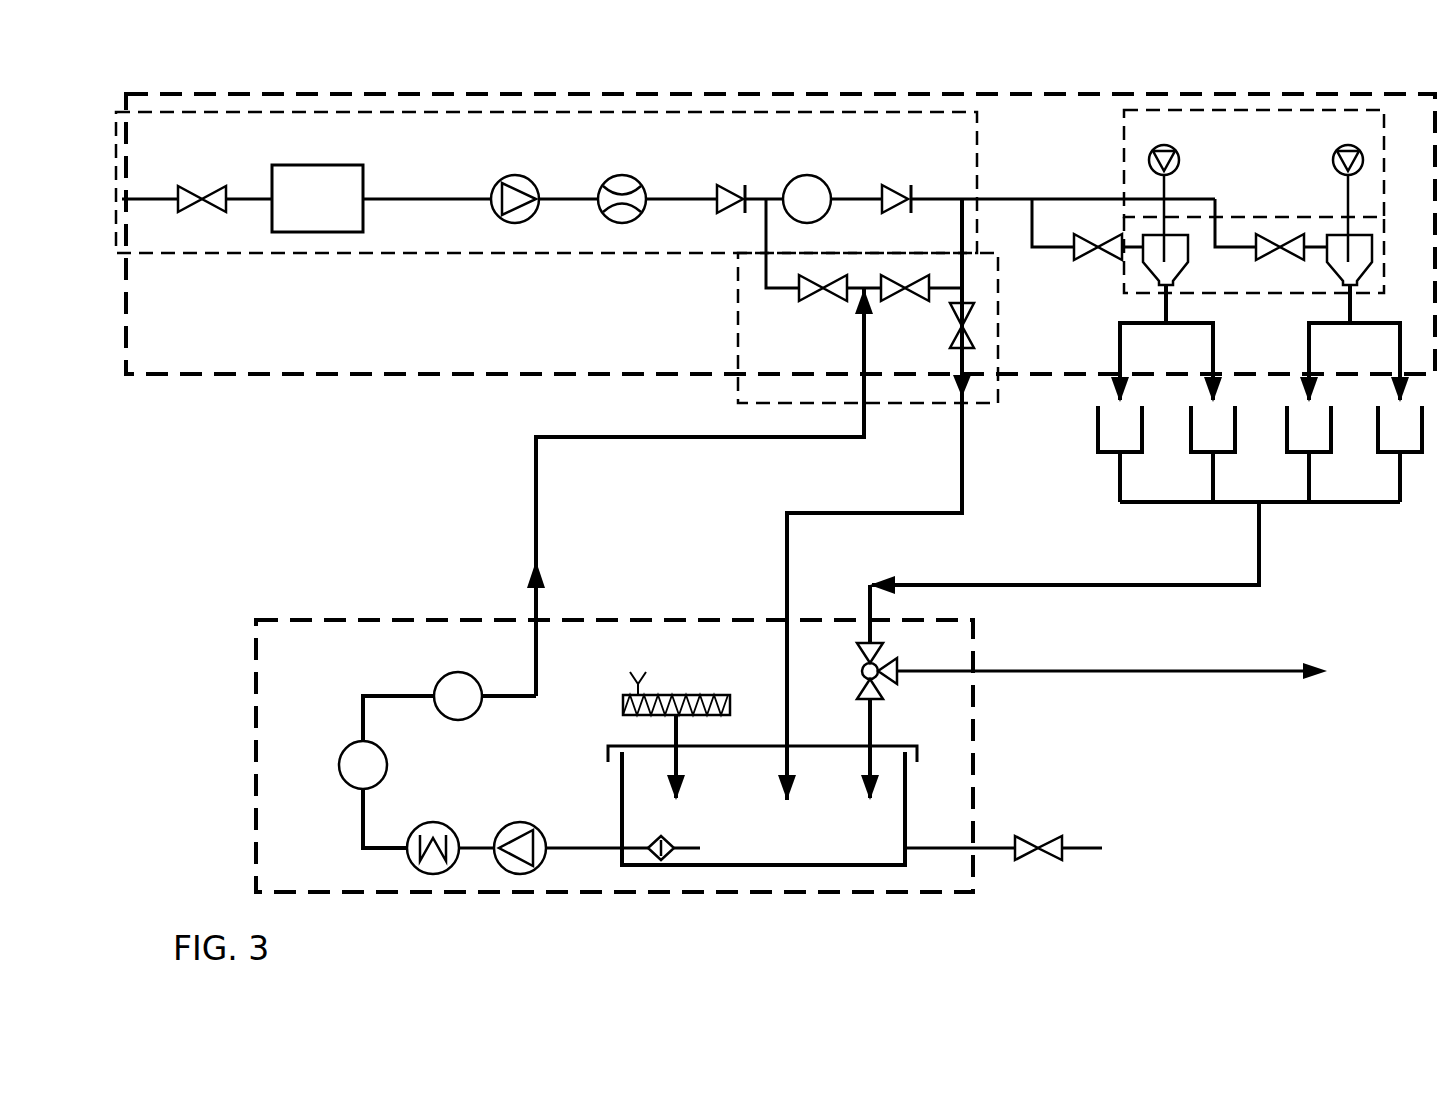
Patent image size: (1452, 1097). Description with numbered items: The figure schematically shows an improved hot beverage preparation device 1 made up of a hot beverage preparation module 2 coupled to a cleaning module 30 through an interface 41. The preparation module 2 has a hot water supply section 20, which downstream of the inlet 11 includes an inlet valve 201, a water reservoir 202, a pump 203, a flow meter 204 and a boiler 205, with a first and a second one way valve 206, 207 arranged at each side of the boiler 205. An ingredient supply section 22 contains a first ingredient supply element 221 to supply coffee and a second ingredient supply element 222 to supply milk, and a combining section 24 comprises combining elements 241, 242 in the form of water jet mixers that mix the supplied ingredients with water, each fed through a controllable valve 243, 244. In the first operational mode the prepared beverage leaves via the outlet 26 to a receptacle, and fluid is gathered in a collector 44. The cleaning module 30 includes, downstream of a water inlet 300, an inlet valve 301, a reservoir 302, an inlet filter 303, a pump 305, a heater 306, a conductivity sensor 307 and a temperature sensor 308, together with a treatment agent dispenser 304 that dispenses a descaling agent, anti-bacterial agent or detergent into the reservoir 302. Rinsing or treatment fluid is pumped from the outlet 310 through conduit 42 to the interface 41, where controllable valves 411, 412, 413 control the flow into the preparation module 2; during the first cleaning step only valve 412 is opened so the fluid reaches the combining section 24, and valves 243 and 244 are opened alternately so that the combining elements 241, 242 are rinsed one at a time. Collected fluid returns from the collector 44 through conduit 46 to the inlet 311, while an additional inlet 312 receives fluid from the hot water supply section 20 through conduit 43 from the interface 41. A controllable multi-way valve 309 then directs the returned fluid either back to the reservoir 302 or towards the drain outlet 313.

The hot beverage preparation device 1 is at (1253, 800).
The hot beverage preparation module 2 is at (452, 380).
The inlet 11 is at (122, 198).
The hot water supply section 20 is at (427, 258).
The ingredient supply section 22 is at (1115, 122).
The combining section 24 is at (1116, 272).
The outlet 26 is at (1093, 393).
The cleaning module 30 is at (390, 600).
The interface 41 is at (728, 398).
The conduit 42 is at (645, 438).
The conduit 43 is at (892, 512).
The collector 44 is at (1298, 496).
The conduit 46 is at (1165, 593).
The inlet valve 201 is at (210, 218).
The water reservoir 202 is at (323, 180).
The pump 203 is at (515, 245).
The flow meter 204 is at (627, 168).
The boiler 205 is at (807, 177).
The first one way valve 206 is at (733, 185).
The second one way valve 207 is at (905, 190).
The first ingredient supply element 221 is at (1182, 152).
The second ingredient supply element 222 is at (1373, 152).
The combining element 241 is at (1190, 253).
The combining element 242 is at (1288, 323).
The controllable valve 243 is at (1103, 247).
The controllable valve 244 is at (1282, 247).
The water inlet 300 is at (1097, 848).
The inlet valve 301 is at (1035, 840).
The reservoir 302 is at (762, 805).
The inlet filter 303 is at (665, 865).
The treatment agent dispenser 304 is at (692, 673).
The pump 305 is at (507, 877).
The heater 306 is at (462, 878).
The conductivity sensor 307 is at (338, 768).
The temperature sensor 308 is at (463, 718).
The multi-way valve 309 is at (890, 690).
The outlet 310 is at (533, 618).
The inlet 311 is at (868, 618).
The additional inlet 312 is at (782, 613).
The drain outlet 313 is at (1145, 671).
The controllable valve 411 is at (822, 297).
The controllable valve 412 is at (903, 273).
The controllable valve 413 is at (945, 315).